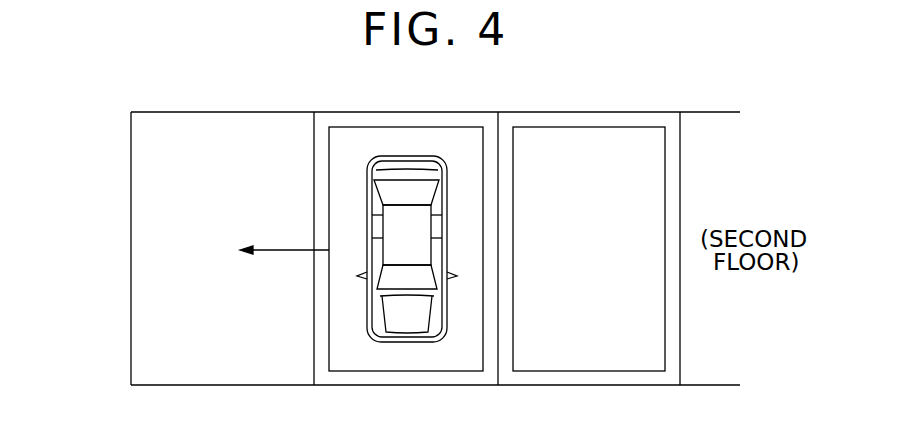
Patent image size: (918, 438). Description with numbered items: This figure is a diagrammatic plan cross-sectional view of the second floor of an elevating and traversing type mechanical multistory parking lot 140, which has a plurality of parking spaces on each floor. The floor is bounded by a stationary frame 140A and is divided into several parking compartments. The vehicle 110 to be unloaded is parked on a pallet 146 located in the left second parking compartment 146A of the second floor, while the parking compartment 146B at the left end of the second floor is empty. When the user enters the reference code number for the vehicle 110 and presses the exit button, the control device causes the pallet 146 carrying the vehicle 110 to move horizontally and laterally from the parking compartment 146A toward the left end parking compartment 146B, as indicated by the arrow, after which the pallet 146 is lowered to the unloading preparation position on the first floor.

The mechanical multistory parking lot 140 is at (697, 106).
The frame 140A is at (190, 112).
The parking compartment 146B is at (148, 246).
The pallet 146 is at (452, 358).
The parking compartment 146A is at (492, 247).
The vehicle 110 is at (410, 156).